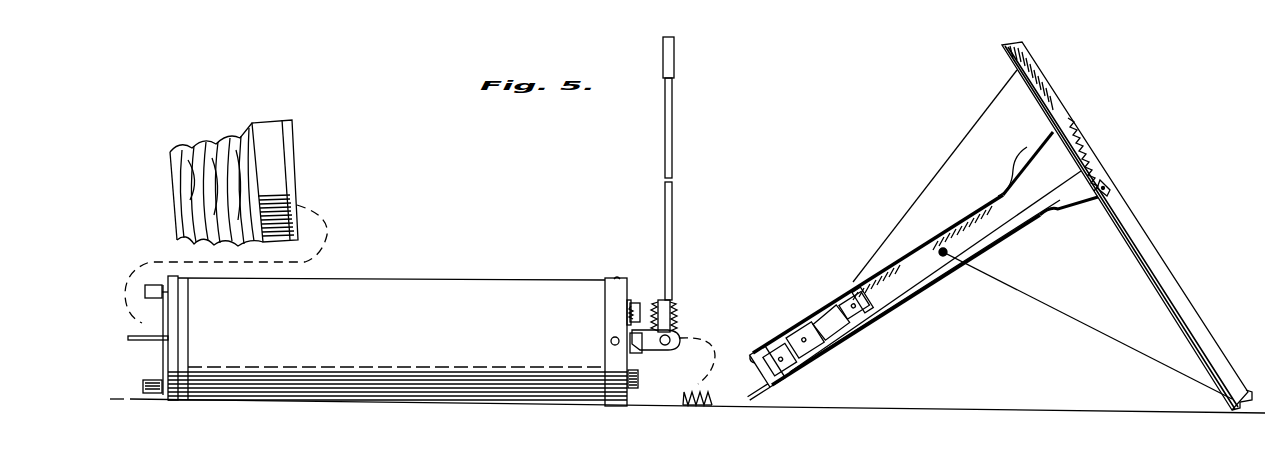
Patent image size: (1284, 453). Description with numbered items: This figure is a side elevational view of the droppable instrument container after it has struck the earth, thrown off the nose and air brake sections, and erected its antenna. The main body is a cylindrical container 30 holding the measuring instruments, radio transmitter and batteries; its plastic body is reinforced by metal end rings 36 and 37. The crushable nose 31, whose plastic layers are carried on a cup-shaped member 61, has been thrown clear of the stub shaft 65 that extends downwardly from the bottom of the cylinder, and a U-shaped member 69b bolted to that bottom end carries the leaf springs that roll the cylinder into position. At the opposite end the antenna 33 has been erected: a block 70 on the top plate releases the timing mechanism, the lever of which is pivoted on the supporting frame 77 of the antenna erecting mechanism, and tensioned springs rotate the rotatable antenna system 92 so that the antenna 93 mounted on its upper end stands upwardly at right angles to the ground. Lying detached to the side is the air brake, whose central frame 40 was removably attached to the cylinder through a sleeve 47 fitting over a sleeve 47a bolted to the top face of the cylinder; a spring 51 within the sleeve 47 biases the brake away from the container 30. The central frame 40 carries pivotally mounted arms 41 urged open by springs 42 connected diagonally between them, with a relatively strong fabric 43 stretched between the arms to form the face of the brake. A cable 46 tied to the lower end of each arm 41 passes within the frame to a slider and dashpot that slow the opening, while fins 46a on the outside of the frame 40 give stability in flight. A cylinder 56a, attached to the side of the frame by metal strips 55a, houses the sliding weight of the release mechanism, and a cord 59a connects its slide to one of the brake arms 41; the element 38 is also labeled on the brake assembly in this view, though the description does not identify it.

The cylindrical container 30 is at (463, 276).
The crushable nose 31 is at (203, 134).
The antenna 33 is at (678, 291).
The metal end ring 36 is at (608, 406).
The metal end ring 37 is at (181, 400).
The inclined guide rail 38 is at (846, 340).
The central frame 40 is at (905, 288).
The pivotally mounted arms 41 is at (1160, 250).
The springs 42 is at (1092, 152).
The fabric 43 is at (1115, 193).
The cable 46 is at (1053, 314).
The fins 46a is at (1028, 148).
The sleeve 47 is at (745, 393).
The sleeve 47a is at (648, 352).
The spring 51 is at (680, 397).
The metal strips 55a is at (782, 372).
The cylinder 56a is at (886, 310).
The cord 59a is at (912, 212).
The cup-shaped member 61 is at (278, 122).
The stub shaft 65 is at (132, 343).
The U-shaped member 69b is at (162, 352).
The block 70 is at (642, 308).
The supporting frame 77 is at (682, 330).
The rotatable antenna system 92 is at (679, 304).
The antenna 93 is at (673, 143).